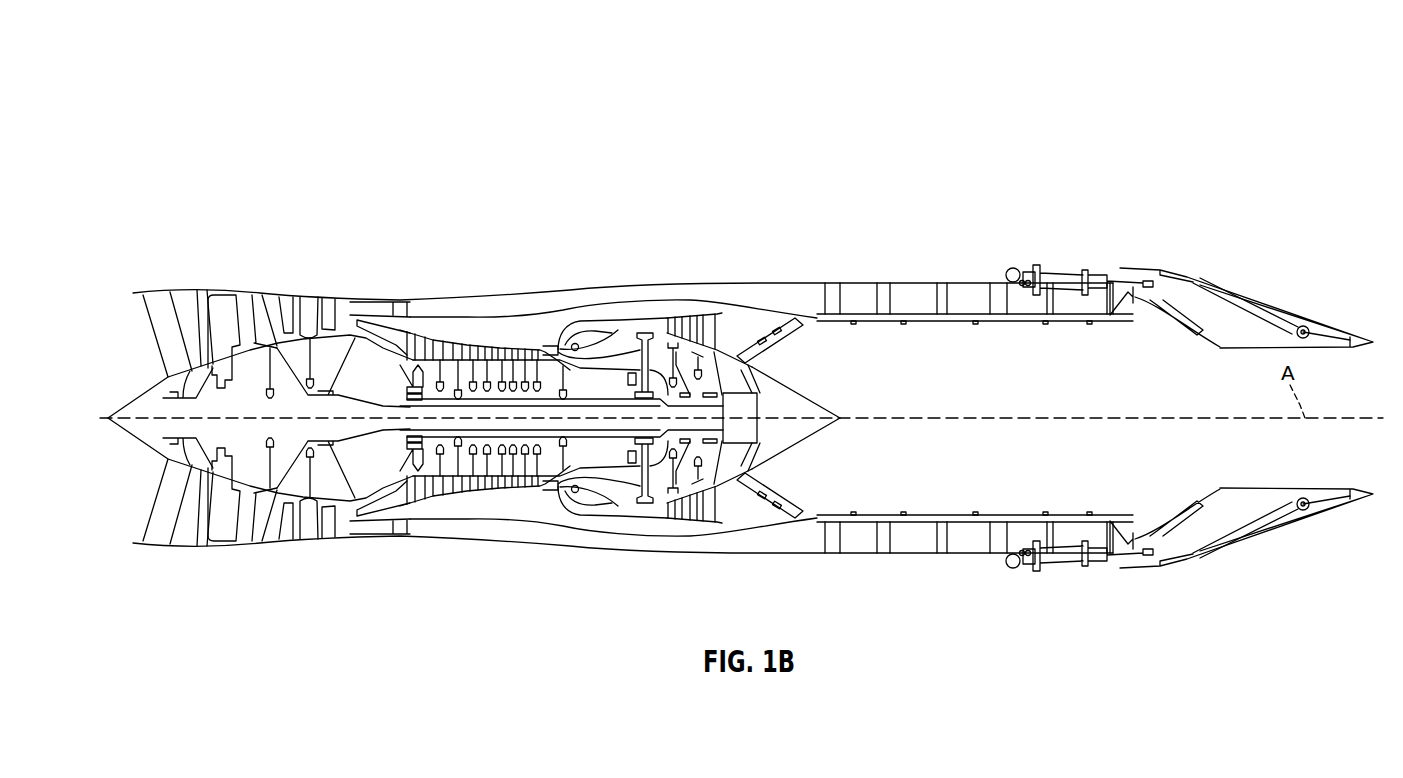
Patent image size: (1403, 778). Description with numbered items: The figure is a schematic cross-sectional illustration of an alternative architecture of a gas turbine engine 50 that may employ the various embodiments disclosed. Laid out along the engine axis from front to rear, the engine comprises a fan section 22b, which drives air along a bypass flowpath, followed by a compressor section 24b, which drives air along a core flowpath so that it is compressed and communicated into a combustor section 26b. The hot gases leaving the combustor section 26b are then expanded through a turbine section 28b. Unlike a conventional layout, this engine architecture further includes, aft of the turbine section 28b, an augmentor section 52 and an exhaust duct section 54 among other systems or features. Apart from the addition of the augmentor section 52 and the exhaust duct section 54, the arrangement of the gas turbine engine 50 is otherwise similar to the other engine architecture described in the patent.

The fan section 22b is at (291, 258).
The compressor section 24b is at (473, 267).
The combustor section 26b is at (612, 274).
The turbine section 28b is at (689, 269).
The gas turbine engine 50 is at (1095, 307).
The augmentor section 52 is at (817, 227).
The exhaust duct section 54 is at (1069, 175).